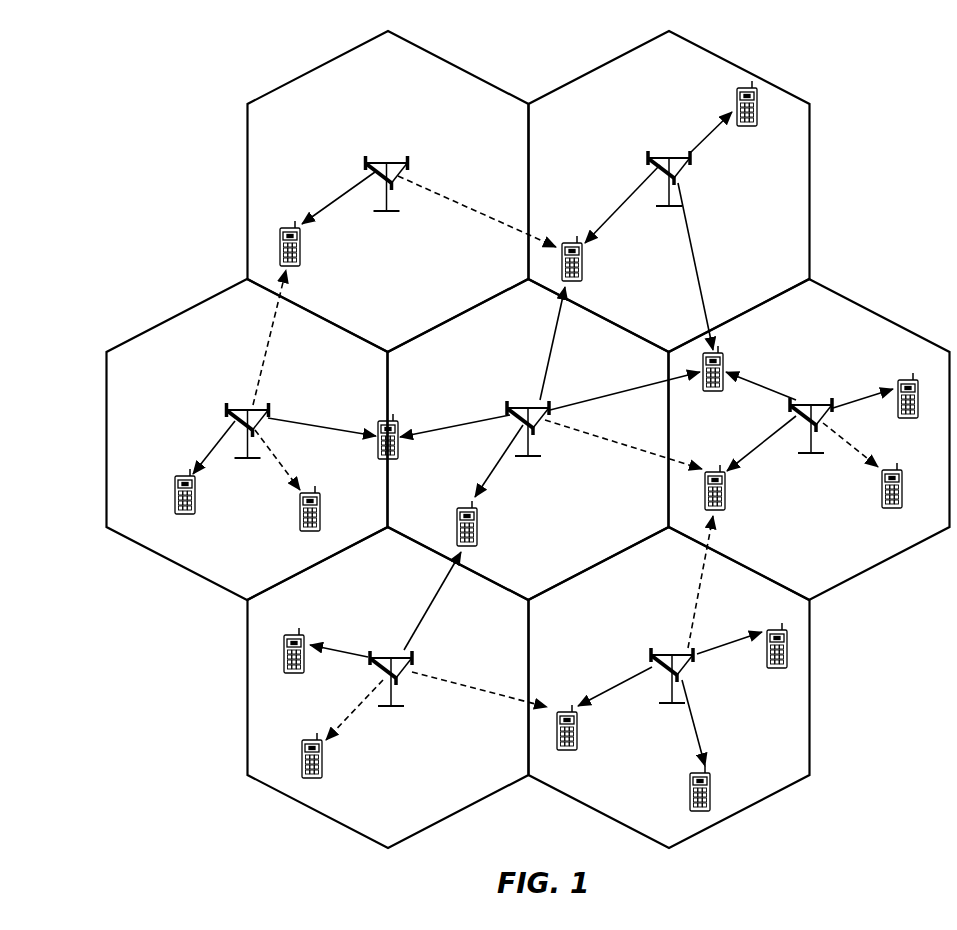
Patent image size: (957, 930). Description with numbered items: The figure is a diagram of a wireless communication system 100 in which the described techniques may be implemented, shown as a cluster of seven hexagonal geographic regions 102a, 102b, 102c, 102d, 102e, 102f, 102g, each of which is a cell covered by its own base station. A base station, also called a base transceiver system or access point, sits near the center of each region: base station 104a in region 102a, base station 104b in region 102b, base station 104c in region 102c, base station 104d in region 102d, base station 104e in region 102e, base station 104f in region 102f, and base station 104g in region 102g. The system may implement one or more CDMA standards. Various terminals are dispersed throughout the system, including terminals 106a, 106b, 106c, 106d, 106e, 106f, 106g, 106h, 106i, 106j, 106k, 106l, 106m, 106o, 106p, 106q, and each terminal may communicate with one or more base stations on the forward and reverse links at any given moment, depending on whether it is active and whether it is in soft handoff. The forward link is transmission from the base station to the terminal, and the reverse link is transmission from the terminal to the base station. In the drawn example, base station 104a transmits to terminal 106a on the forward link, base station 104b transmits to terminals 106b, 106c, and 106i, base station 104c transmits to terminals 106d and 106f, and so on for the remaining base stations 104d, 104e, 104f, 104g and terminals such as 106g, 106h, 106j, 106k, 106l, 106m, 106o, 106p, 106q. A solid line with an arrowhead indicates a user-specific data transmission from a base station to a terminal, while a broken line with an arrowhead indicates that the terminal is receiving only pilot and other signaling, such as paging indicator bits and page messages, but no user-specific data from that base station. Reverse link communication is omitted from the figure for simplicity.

The wireless communication system 100 is at (893, 60).
The geographic region 102a is at (318, 67).
The geographic region 102b is at (737, 65).
The geographic region 102c is at (175, 316).
The geographic region 102d is at (550, 322).
The geographic region 102e is at (880, 314).
The geographic region 102f is at (247, 695).
The geographic region 102g is at (811, 690).
The base station 104a is at (383, 160).
The base station 104b is at (667, 156).
The base station 104c is at (238, 394).
The base station 104d is at (520, 392).
The base station 104e is at (816, 403).
The base station 104f is at (385, 655).
The base station 104g is at (668, 653).
The terminal 106a is at (283, 226).
The terminal 106b is at (565, 242).
The terminal 106c is at (737, 95).
The terminal 106d is at (175, 492).
The terminal 106e is at (308, 492).
The terminal 106f is at (378, 428).
The terminal 106g is at (462, 507).
The terminal 106h is at (710, 471).
The terminal 106i is at (724, 370).
The terminal 106j is at (905, 379).
The terminal 106k is at (890, 469).
The terminal 106l is at (288, 634).
The terminal 106m is at (305, 739).
The terminal 106o is at (578, 730).
The terminal 106p is at (690, 788).
The terminal 106q is at (777, 629).